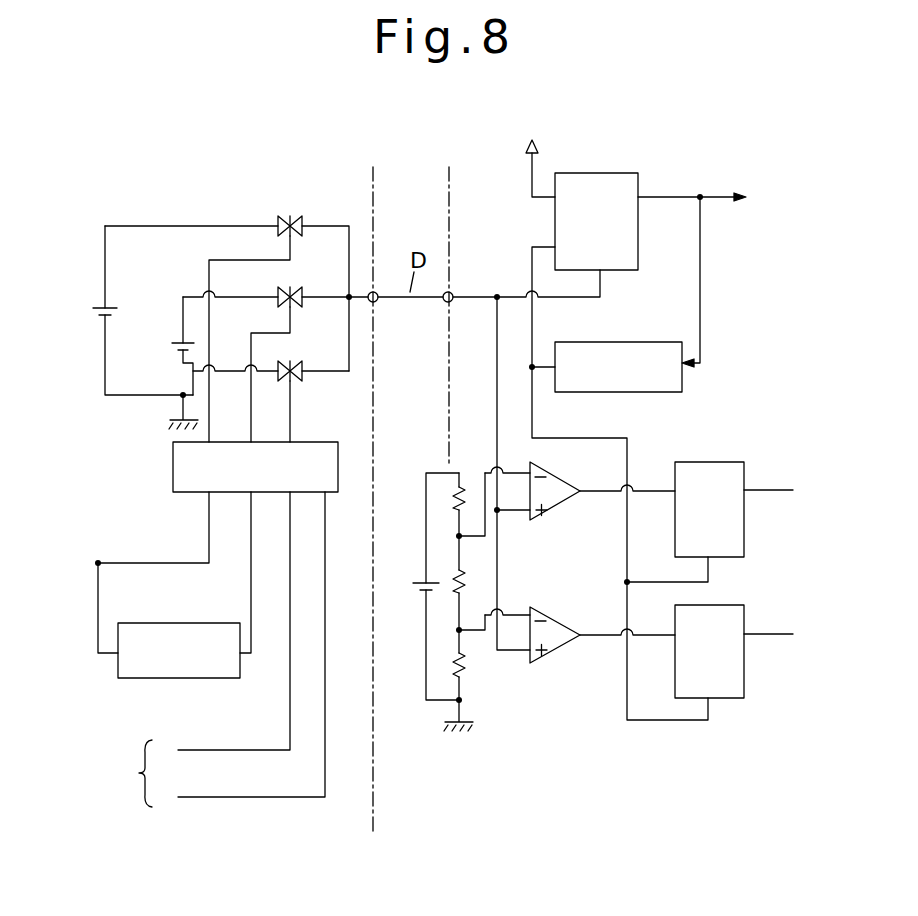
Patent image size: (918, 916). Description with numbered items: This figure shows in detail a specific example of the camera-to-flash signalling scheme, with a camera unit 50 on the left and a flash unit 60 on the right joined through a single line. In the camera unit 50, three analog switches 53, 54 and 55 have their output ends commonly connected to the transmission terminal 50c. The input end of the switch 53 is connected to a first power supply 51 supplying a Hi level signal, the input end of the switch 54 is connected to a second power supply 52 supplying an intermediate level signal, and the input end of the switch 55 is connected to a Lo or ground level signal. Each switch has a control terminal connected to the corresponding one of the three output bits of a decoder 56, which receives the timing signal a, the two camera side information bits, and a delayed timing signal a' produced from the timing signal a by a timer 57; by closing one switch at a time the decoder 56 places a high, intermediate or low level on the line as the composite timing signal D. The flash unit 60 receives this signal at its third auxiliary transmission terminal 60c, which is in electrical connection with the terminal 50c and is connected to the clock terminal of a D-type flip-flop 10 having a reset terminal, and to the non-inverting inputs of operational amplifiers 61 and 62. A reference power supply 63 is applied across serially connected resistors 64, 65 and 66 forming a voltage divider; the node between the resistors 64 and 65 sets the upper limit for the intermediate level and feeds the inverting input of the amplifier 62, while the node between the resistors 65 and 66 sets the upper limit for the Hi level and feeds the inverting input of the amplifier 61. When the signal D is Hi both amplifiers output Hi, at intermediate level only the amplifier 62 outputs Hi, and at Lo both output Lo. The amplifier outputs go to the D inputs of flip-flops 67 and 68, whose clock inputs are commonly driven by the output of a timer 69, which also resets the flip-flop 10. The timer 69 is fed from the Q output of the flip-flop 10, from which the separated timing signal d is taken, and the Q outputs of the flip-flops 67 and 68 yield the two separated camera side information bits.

The D flip-flop 10 is at (612, 173).
The camera unit 50 is at (277, 830).
The transmission terminal 50c is at (376, 303).
The first power supply 51 is at (115, 309).
The second power supply 52 is at (174, 348).
The analog switch 53 is at (293, 215).
The analog switch 54 is at (296, 288).
The analog switch 55 is at (296, 362).
The decoder 56 is at (333, 442).
The timer 57 is at (193, 623).
The flash unit 60 is at (571, 705).
The third auxiliary transmission terminal 60c is at (451, 303).
The operational amplifier 61 is at (562, 480).
The operational amplifier 62 is at (560, 612).
The reference power supply 63 is at (413, 587).
The resistor 64 is at (455, 668).
The resistor 65 is at (456, 578).
The resistor 66 is at (456, 498).
The D-type flip-flop 67 is at (722, 462).
The D-type flip-flop 68 is at (745, 699).
The timer 69 is at (683, 380).